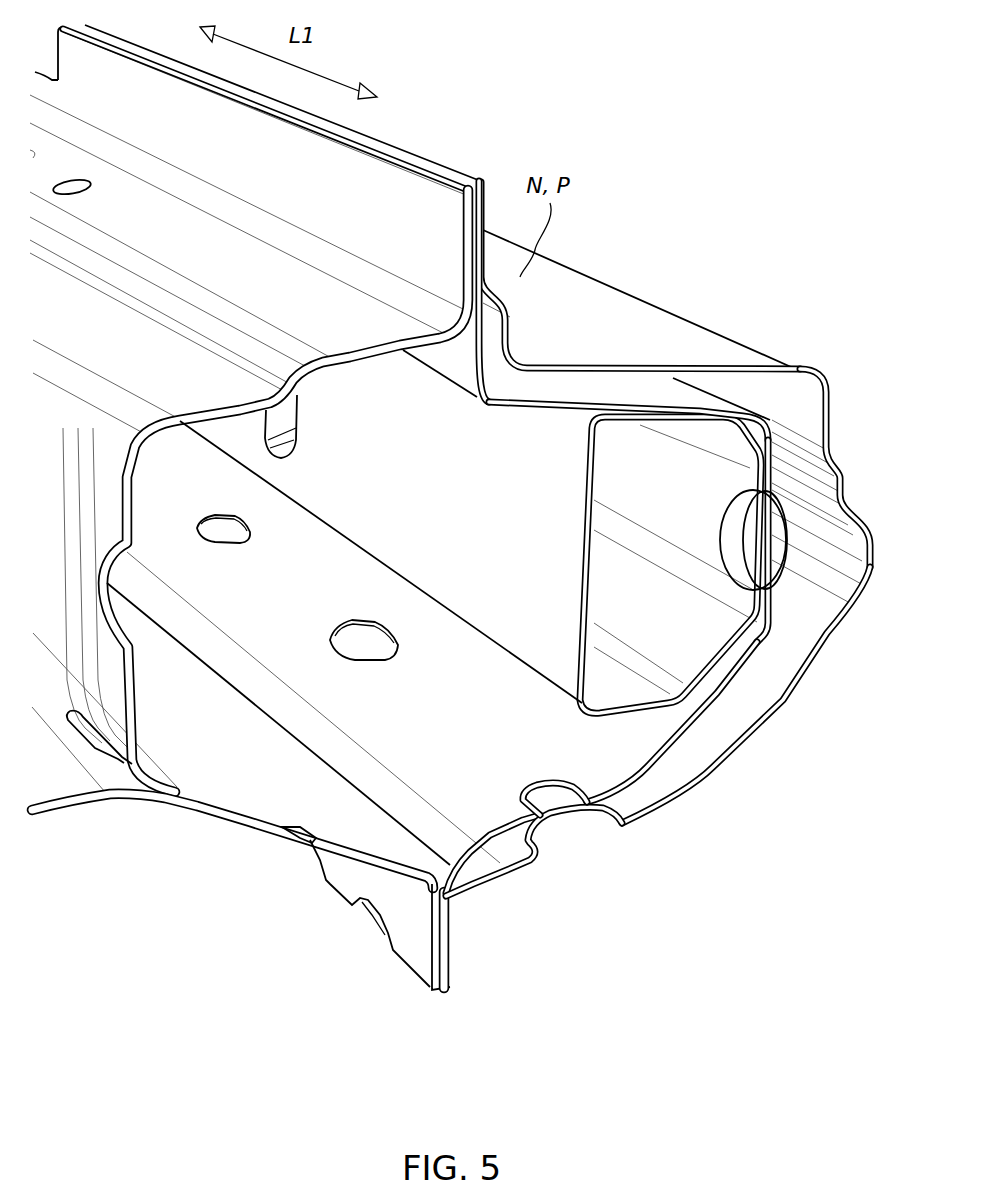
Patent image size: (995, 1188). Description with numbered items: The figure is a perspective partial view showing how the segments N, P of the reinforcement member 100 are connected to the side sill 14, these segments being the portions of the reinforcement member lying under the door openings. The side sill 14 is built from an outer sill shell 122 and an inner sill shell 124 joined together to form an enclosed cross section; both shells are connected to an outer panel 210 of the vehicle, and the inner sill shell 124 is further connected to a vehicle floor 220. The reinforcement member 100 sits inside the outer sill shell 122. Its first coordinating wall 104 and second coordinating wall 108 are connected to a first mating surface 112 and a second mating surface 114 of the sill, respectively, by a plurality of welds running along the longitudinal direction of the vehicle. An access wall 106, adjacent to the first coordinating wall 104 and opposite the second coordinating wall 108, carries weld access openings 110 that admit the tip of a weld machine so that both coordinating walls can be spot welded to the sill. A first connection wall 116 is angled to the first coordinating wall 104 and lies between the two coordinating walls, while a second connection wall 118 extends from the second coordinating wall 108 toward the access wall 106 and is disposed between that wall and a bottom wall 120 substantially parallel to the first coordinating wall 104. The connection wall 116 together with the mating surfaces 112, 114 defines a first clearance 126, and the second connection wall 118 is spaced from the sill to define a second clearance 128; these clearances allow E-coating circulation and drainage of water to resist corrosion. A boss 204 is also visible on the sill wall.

The side sill 14 is at (568, 388).
The reinforcement member 100 is at (363, 508).
The first coordinating wall 104 is at (657, 420).
The access wall 106 is at (530, 623).
The second coordinating wall 108 is at (767, 483).
The weld access openings 110 is at (293, 400).
The first mating surface 112 is at (567, 412).
The second mating surface 114 is at (757, 623).
The first connection wall 116 is at (735, 427).
The second connection wall 118 is at (721, 651).
The bottom wall 120 is at (637, 713).
The outer sill shell 122 is at (618, 794).
The inner sill shell 124 is at (310, 843).
The first clearance 126 is at (745, 420).
The second clearance 128 is at (742, 645).
The boss 204 is at (727, 536).
The outer panel 210 is at (637, 323).
The vehicle floor 220 is at (107, 797).